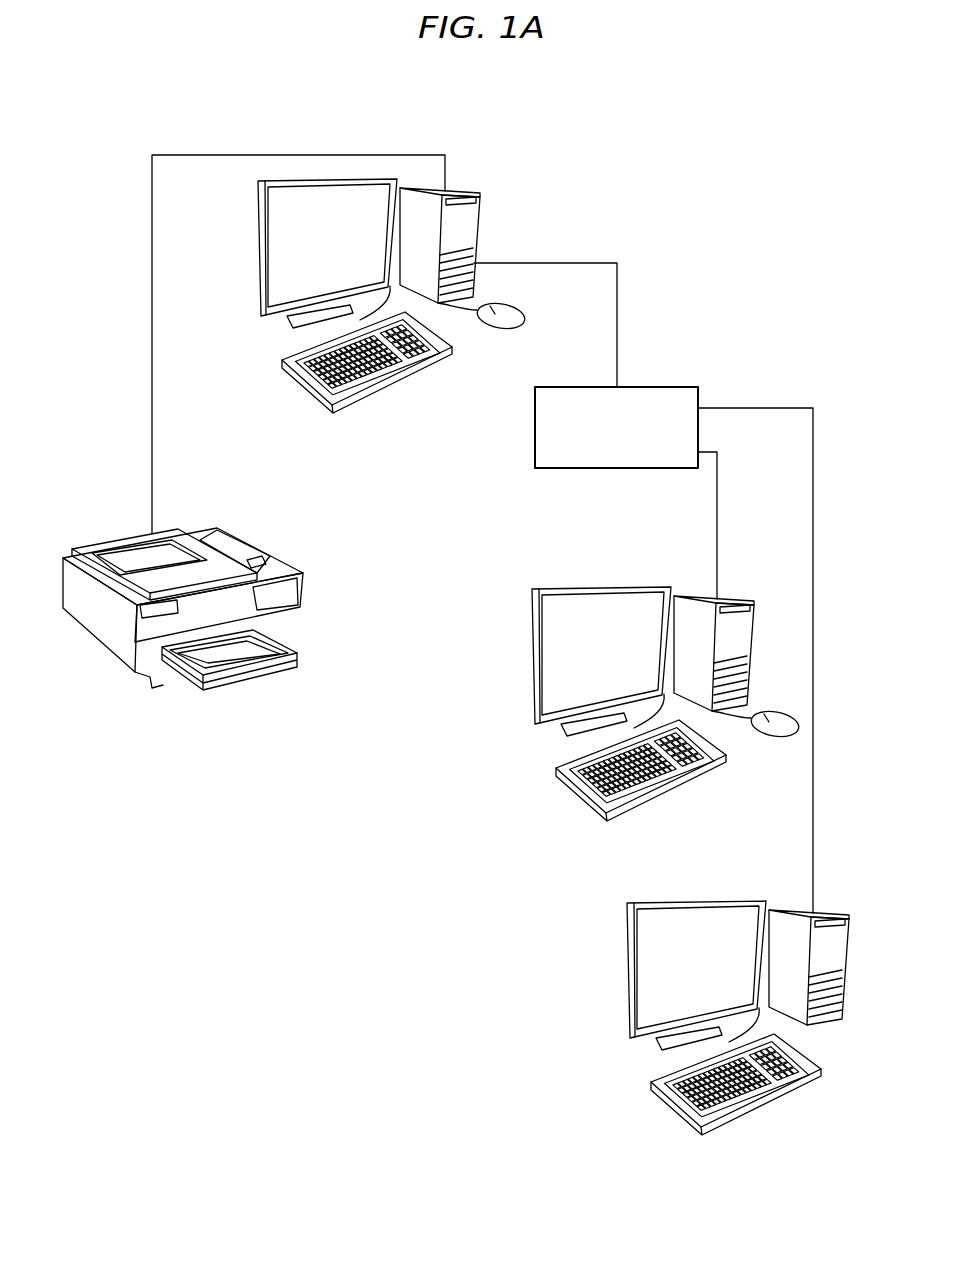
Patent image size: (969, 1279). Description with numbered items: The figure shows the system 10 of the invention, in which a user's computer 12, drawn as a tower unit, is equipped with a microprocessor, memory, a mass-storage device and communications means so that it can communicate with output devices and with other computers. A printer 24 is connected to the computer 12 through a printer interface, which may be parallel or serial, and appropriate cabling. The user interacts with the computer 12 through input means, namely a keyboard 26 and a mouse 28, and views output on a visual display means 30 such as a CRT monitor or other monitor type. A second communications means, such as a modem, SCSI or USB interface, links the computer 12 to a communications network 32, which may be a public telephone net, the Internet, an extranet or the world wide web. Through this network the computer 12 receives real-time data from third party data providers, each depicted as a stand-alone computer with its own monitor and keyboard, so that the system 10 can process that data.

The system 10 is at (118, 146).
The computer 12 is at (481, 210).
The printer 24 is at (253, 545).
The keyboard 26 is at (305, 390).
The mouse 28 is at (498, 337).
The visual display means 30 is at (256, 253).
The communications network 32 is at (535, 442).